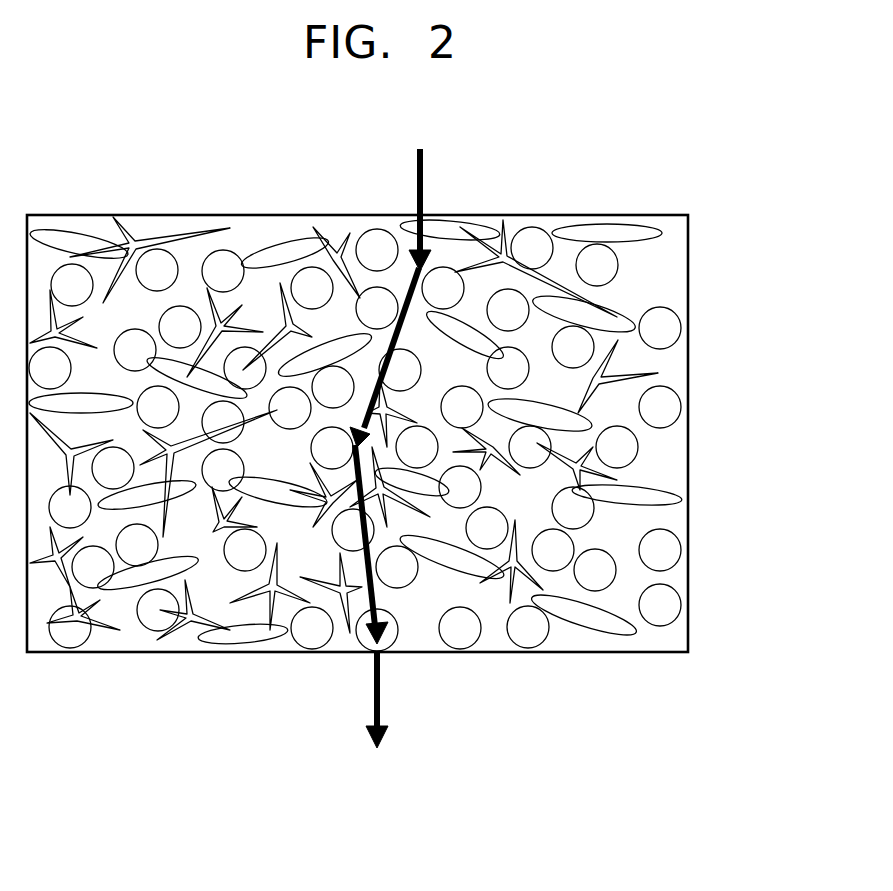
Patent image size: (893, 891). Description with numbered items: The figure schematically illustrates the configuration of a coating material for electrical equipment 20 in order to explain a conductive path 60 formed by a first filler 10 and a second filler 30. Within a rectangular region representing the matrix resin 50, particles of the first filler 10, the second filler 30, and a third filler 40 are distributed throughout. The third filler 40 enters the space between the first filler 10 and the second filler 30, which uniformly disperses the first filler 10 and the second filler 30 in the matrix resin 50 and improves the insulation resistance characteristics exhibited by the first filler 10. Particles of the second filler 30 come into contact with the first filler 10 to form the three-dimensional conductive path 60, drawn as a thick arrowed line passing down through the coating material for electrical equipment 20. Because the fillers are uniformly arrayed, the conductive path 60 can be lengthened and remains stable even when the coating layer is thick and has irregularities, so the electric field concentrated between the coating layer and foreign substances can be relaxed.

The coating material for electrical equipment 20 is at (738, 180).
The matrix resin 50 is at (647, 286).
The first filler 10 is at (615, 361).
The second filler 30 is at (620, 452).
The third filler 40 is at (660, 496).
The conductive path 60 is at (427, 172).